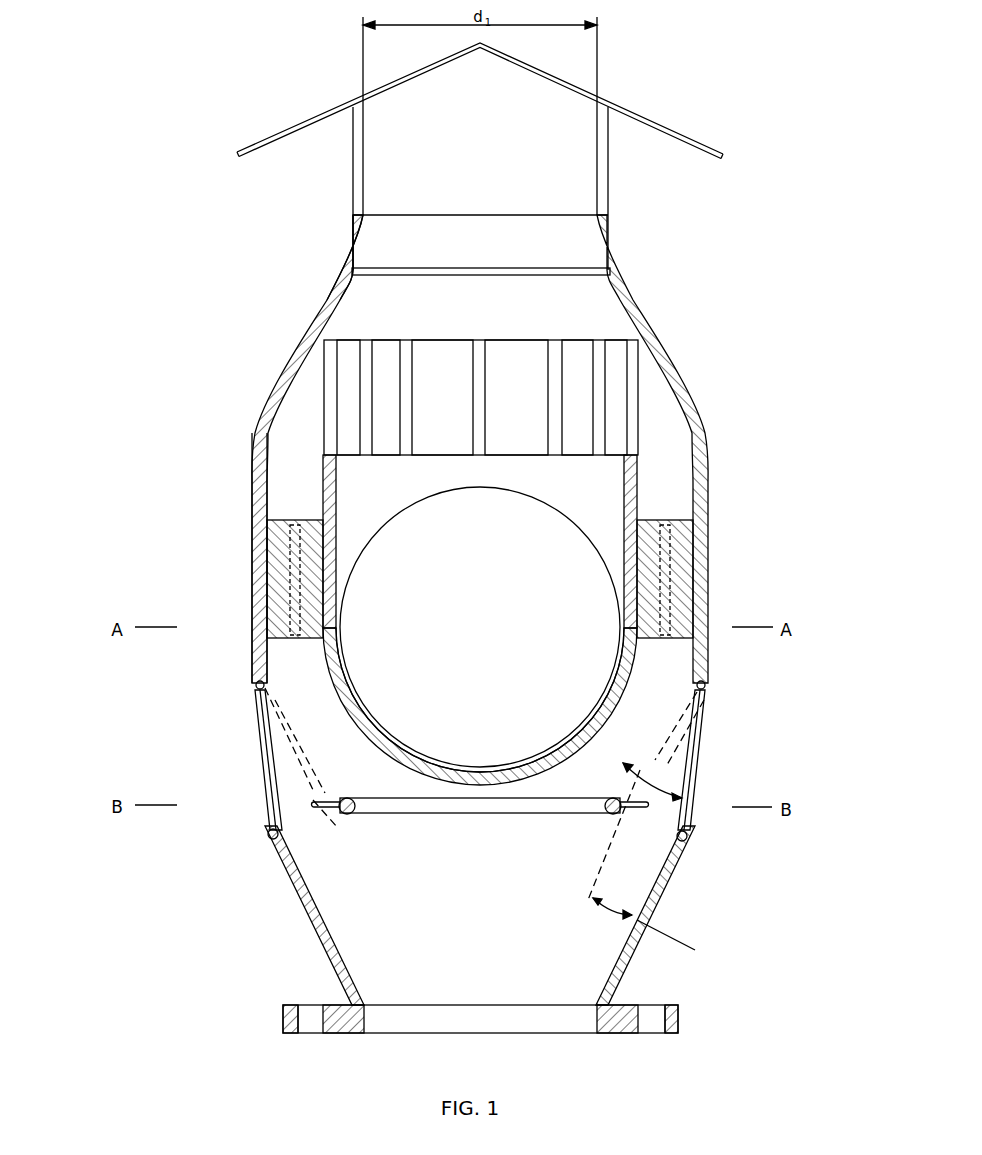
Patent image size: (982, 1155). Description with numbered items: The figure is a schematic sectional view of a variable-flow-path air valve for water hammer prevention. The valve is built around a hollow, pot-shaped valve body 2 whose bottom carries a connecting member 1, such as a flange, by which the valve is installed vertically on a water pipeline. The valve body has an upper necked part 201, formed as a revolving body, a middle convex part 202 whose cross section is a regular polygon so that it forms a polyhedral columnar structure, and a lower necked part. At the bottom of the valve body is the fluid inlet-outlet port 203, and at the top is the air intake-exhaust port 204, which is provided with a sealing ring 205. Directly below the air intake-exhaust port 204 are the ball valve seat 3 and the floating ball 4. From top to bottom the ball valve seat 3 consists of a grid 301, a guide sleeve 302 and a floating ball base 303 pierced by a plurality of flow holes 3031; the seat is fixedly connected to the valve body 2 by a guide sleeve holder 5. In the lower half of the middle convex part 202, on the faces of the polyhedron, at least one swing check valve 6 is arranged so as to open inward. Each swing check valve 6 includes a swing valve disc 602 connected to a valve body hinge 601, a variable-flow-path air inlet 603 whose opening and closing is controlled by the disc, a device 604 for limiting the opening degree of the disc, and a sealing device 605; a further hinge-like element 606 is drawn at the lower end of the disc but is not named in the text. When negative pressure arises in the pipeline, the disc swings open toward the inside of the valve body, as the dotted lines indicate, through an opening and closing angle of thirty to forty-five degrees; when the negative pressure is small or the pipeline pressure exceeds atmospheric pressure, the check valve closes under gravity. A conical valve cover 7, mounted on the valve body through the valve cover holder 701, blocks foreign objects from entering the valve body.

The connecting member 1 is at (288, 1015).
The valve body 2 is at (242, 407).
The upper necked part 201 is at (363, 247).
The middle convex part 202 is at (258, 470).
The fluid inlet-outlet port 203 is at (492, 1000).
The air intake-exhaust port 204 is at (481, 213).
The sealing ring 205 is at (510, 260).
The ball valve seat 3 is at (652, 393).
The grid 301 is at (632, 435).
The guide sleeve 302 is at (633, 510).
The floating ball base 303 is at (630, 692).
The flow holes 3031 is at (622, 732).
The floating ball 4 is at (530, 530).
The guide sleeve holder 5 is at (290, 553).
The swing check valve 6 is at (238, 725).
The valve body hinge 601 is at (260, 687).
The swing valve disc 602 is at (262, 773).
The variable-flow-path air inlet 603 is at (262, 760).
The device for limiting the opening degree of the valve disc 604 is at (587, 905).
The sealing device 605 is at (268, 838).
The lower hinge 606 is at (268, 814).
The valve cover 7 is at (613, 98).
The valve cover holder 701 is at (612, 168).